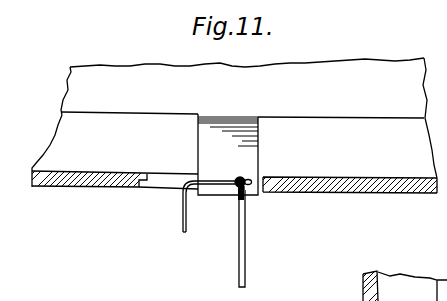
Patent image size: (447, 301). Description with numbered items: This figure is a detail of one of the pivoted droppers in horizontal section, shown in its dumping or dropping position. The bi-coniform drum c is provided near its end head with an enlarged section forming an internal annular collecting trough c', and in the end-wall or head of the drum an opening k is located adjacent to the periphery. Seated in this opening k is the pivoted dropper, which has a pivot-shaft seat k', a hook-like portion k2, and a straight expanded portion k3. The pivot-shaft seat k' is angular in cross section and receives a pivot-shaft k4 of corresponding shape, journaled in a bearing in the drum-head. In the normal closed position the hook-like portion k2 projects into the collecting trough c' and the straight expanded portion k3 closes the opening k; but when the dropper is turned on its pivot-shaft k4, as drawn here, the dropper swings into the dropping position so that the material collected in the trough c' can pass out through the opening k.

The drum c is at (249, 118).
The collecting trough c' is at (234, 154).
The opening k is at (195, 164).
The pivot-shaft seat k' is at (270, 169).
The slot k'' is at (249, 131).
The hook-like portion k2 is at (187, 212).
The straight expanded portion k3 is at (275, 255).
The pivot-shaft k4 is at (238, 178).